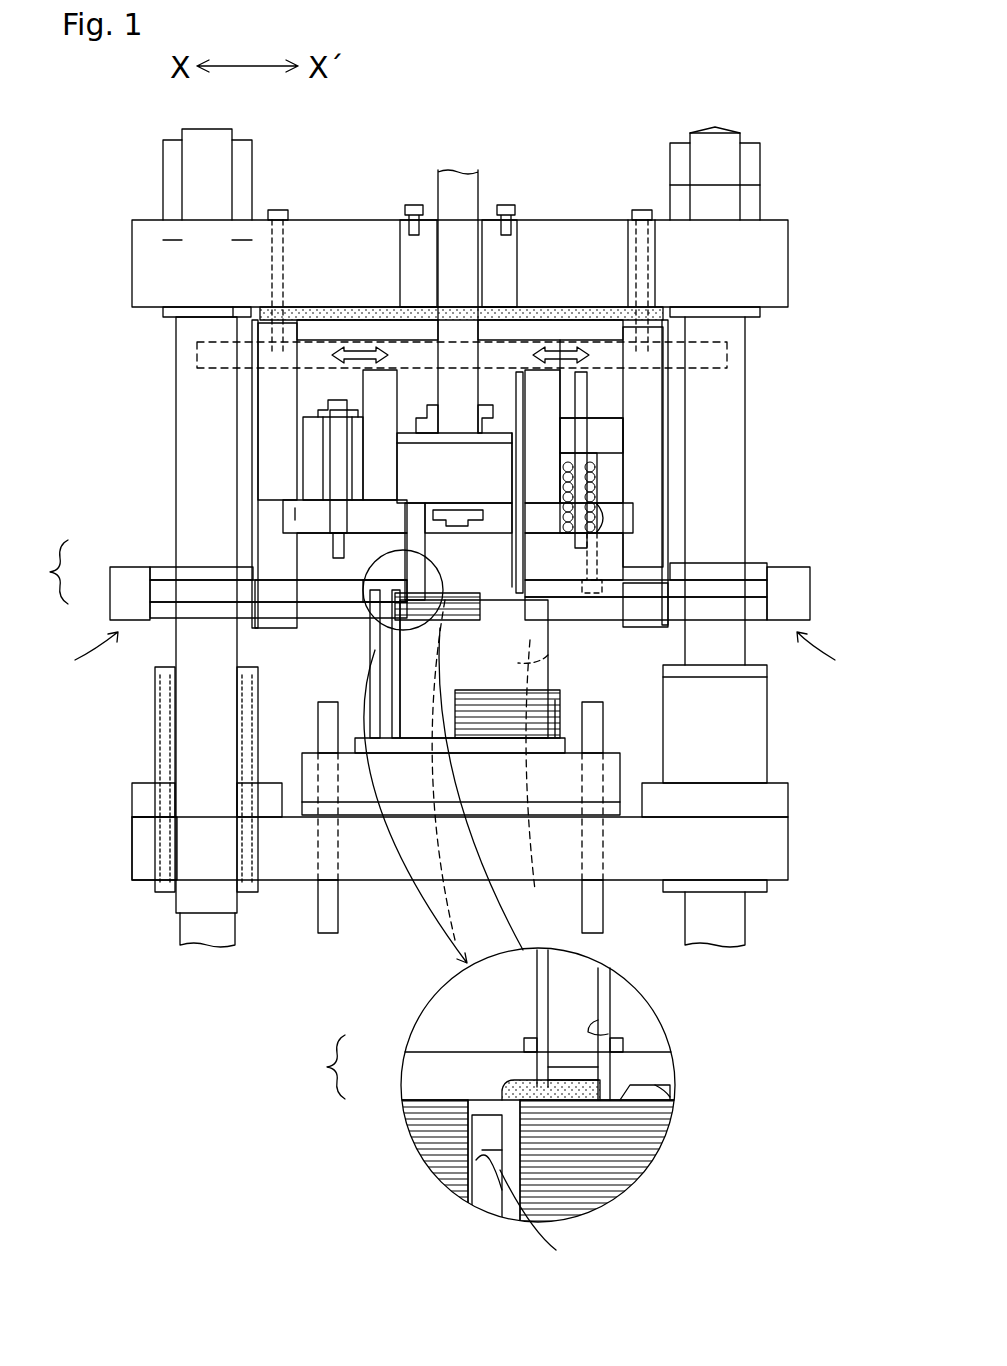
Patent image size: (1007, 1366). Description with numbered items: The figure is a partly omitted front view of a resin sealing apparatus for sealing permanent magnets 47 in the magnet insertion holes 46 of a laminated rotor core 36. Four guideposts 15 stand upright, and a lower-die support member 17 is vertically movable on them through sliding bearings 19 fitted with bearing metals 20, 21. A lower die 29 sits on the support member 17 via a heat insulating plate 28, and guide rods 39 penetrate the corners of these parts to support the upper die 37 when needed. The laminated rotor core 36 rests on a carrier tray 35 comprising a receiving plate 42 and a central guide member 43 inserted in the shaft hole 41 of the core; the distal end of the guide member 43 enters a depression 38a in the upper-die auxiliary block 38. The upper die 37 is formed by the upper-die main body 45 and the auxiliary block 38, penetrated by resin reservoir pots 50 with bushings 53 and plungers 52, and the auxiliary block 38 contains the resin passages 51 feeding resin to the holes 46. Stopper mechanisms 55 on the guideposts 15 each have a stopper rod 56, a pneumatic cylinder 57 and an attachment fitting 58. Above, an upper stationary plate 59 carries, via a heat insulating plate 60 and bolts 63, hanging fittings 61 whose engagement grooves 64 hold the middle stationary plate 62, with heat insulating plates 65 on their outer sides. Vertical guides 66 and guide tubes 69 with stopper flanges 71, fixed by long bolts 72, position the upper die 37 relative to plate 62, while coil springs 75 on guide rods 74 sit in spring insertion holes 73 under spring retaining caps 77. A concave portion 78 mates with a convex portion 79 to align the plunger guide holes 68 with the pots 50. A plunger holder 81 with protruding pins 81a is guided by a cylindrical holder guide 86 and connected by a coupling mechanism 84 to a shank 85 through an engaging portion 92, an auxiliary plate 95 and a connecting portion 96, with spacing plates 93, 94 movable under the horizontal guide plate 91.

The guidepost 15 is at (205, 440).
The lower-die support member 17 is at (770, 848).
The sliding bearing 19 is at (122, 831).
The bearing metal 20 is at (165, 718).
The bearing metal 21 is at (165, 858).
The heat insulating plate 28 is at (368, 780).
The lower die 29 is at (403, 780).
The carrier tray 35 is at (568, 727).
The laminated rotor core 36 is at (700, 670).
The upper die 37 is at (186, 819).
The upper-die auxiliary block 38 is at (300, 605).
The depression 38a is at (465, 605).
The guide rod 39 is at (320, 722).
The shaft hole 41 is at (548, 660).
The receiving plate 42 is at (523, 745).
The guide member 43 is at (458, 780).
The upper-die main body 45 is at (300, 582).
The magnet insertion hole 46 is at (532, 1184).
The permanent magnet 47 is at (502, 1136).
The resin reservoir pot 50 is at (392, 640).
The resin passage 51 is at (520, 1085).
The plunger 52 is at (572, 980).
The bushing 53 is at (603, 997).
The stopper mechanism 55 is at (462, 660).
The stopper rod 56 is at (276, 602).
The pneumatic cylinder 57 is at (780, 588).
The attachment fitting 58 is at (165, 602).
The upper stationary plate 59 is at (775, 265).
The heat insulating plate 60 is at (630, 320).
The hanging fitting 61 is at (285, 435).
The middle stationary plate 62 is at (600, 515).
The bolt 63 is at (278, 210).
The engagement groove 64 is at (300, 510).
The heat insulating plate 65 is at (310, 430).
The vertical guide 66 is at (300, 425).
The plunger guide hole 68 is at (322, 590).
The guide tube 69 is at (330, 455).
The stopper flange 71 is at (300, 400).
The long bolt 72 is at (280, 330).
The spring insertion hole 73 is at (640, 560).
The guide rod 74 is at (640, 380).
The coil spring 75 is at (640, 455).
The spring retaining cap 77 is at (690, 420).
The concave portion 78 is at (418, 525).
The convex portion 79 is at (466, 522).
The plunger holder 81 is at (558, 390).
The protruding pin 81a is at (528, 545).
The coupling mechanism 84 is at (430, 385).
The shank 85 is at (462, 190).
The holder guide 86 is at (430, 385).
The horizontal guide plate 91 is at (568, 350).
The engaging portion 92 is at (505, 205).
The spacing plate 93 is at (470, 405).
The spacing plate 94 is at (640, 330).
The auxiliary plate 95 is at (508, 450).
The connecting portion 96 is at (543, 410).